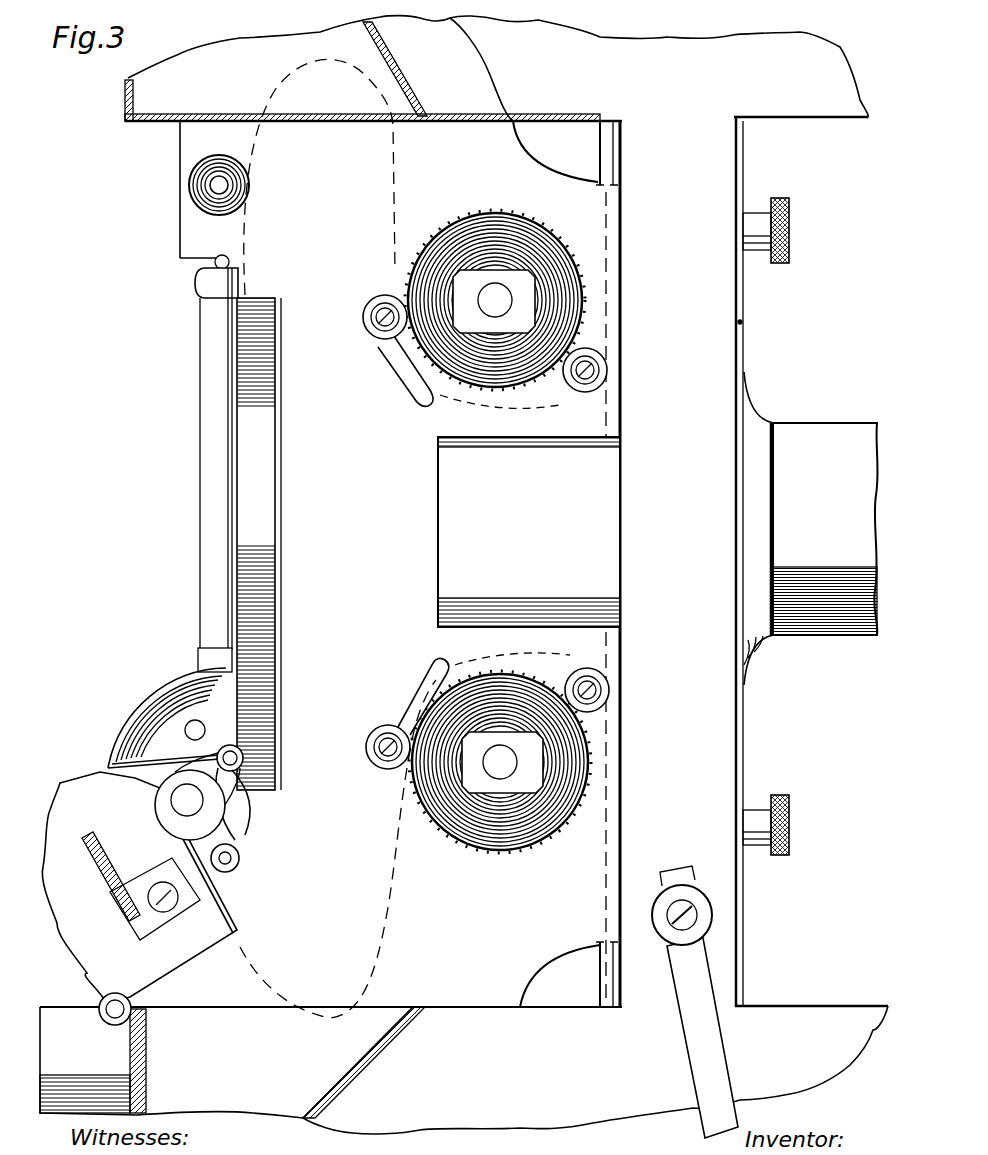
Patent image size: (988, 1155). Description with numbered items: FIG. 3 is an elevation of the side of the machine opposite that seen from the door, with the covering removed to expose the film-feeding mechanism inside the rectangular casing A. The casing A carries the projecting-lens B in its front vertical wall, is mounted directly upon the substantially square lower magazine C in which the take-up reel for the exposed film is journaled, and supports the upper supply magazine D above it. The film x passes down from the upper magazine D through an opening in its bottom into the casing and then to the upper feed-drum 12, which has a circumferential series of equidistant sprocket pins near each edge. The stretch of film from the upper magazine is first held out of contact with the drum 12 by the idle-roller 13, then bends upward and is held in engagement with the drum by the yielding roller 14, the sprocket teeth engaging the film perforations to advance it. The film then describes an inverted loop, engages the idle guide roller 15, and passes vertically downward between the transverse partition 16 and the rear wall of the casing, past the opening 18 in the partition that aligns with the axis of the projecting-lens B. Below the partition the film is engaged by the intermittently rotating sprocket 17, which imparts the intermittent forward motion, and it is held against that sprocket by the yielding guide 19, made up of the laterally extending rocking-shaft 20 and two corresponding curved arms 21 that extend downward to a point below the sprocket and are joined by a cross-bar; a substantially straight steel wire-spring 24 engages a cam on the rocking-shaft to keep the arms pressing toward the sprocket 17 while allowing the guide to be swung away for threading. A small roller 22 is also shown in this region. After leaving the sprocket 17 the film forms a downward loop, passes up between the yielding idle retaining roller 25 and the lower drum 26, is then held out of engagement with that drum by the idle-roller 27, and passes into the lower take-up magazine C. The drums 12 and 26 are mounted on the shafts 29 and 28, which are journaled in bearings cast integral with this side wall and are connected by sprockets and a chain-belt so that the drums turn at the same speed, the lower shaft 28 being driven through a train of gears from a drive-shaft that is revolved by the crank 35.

The upper feed-drum 12 is at (570, 298).
The idle-roller 13 is at (608, 370).
The yielding roller 14 is at (363, 317).
The idle guide roller 15 is at (205, 186).
The transverse partition 16 is at (238, 282).
The intermittently rotating sprocket 17 is at (160, 806).
The opening 18 is at (175, 812).
The yielding guide 19 is at (248, 800).
The rocking-shaft 20 is at (250, 768).
The curved arms 21 is at (170, 705).
The roller 22 is at (242, 858).
The wire-spring 24 is at (130, 746).
The yielding idle retaining roller 25 is at (407, 723).
The lower drum 26 is at (506, 852).
The idle-roller 27 is at (610, 688).
The shaft 28 is at (492, 768).
The shaft 29 is at (502, 305).
The crank 35 is at (712, 1035).
The film x is at (642, 782).
The rectangular casing A is at (789, 608).
The projecting-lens B is at (811, 528).
The magazine C is at (390, 1063).
The magazine D is at (496, 68).